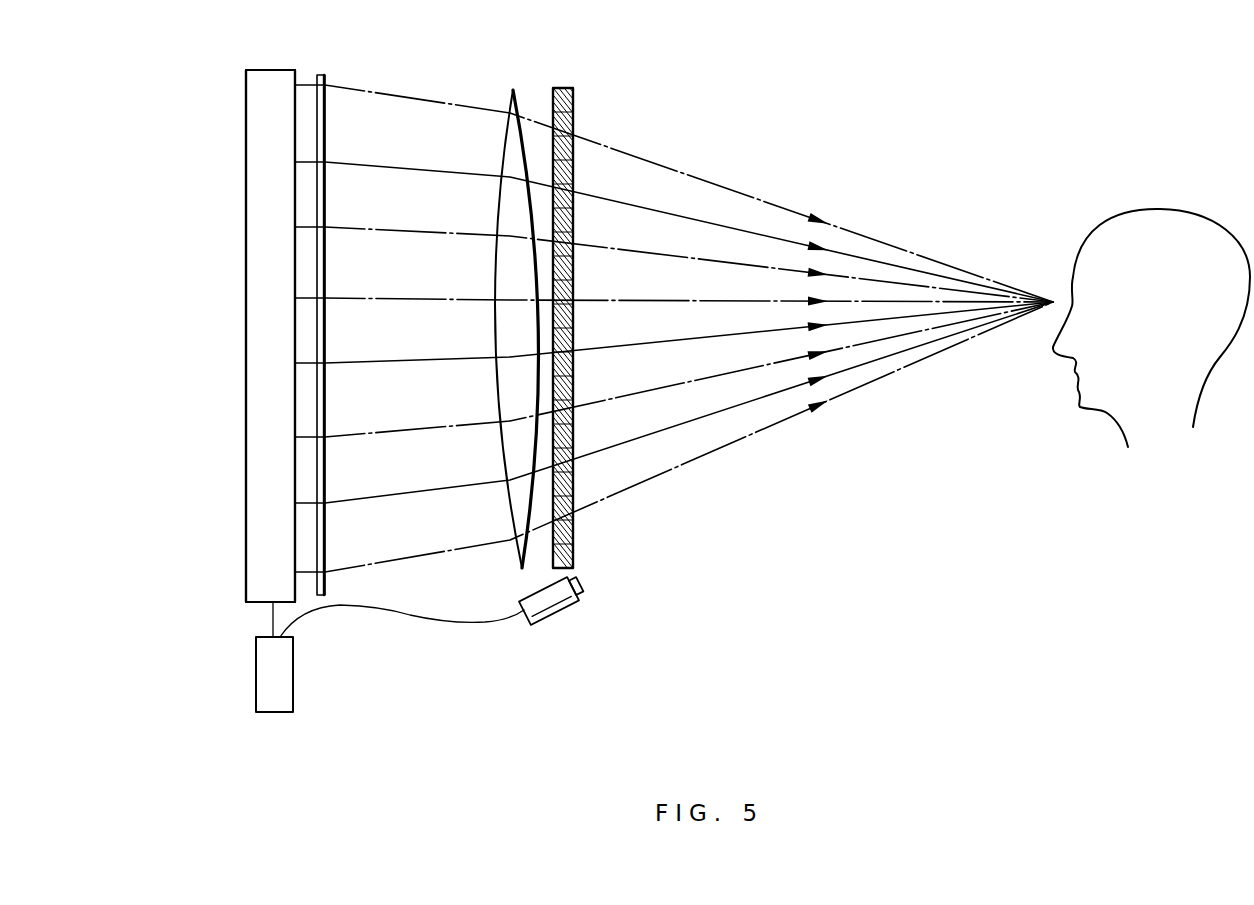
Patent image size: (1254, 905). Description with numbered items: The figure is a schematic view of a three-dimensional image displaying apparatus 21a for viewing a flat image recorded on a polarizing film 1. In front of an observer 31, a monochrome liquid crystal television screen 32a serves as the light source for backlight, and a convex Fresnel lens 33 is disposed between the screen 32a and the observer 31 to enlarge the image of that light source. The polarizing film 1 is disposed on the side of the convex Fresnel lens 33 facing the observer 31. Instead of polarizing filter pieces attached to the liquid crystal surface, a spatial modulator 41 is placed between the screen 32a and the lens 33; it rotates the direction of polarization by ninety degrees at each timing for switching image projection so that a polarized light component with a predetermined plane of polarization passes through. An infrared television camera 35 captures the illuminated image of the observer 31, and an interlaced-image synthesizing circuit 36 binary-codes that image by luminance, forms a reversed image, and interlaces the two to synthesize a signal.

The polarizing film 1 is at (575, 97).
The apparatus 21a is at (229, 84).
The observer 31 is at (1138, 232).
The monochrome liquid crystal television screen 32a is at (272, 79).
The convex Fresnel lens 33 is at (513, 89).
The infrared television camera 35 is at (560, 617).
The interlaced-image synthesizing circuit 36 is at (289, 676).
The spatial modulator 41 is at (323, 76).